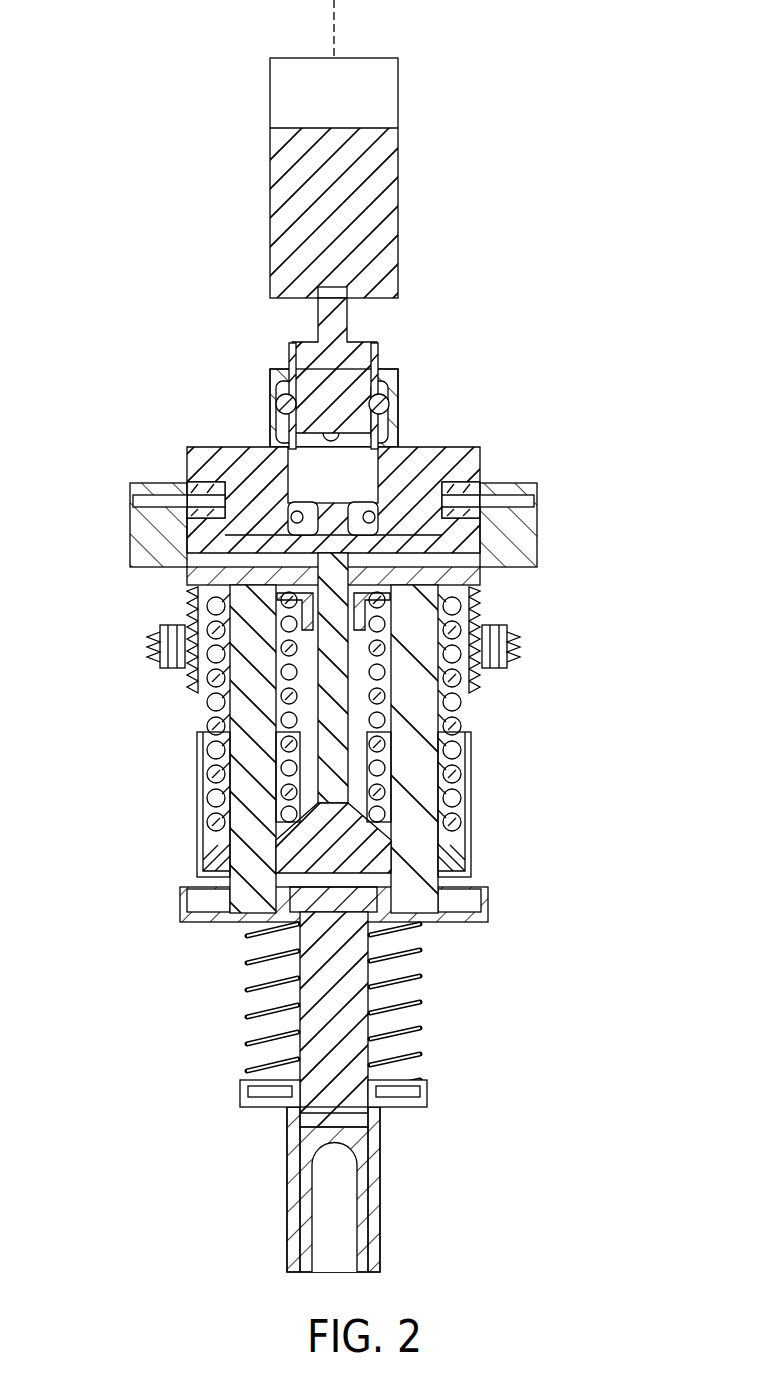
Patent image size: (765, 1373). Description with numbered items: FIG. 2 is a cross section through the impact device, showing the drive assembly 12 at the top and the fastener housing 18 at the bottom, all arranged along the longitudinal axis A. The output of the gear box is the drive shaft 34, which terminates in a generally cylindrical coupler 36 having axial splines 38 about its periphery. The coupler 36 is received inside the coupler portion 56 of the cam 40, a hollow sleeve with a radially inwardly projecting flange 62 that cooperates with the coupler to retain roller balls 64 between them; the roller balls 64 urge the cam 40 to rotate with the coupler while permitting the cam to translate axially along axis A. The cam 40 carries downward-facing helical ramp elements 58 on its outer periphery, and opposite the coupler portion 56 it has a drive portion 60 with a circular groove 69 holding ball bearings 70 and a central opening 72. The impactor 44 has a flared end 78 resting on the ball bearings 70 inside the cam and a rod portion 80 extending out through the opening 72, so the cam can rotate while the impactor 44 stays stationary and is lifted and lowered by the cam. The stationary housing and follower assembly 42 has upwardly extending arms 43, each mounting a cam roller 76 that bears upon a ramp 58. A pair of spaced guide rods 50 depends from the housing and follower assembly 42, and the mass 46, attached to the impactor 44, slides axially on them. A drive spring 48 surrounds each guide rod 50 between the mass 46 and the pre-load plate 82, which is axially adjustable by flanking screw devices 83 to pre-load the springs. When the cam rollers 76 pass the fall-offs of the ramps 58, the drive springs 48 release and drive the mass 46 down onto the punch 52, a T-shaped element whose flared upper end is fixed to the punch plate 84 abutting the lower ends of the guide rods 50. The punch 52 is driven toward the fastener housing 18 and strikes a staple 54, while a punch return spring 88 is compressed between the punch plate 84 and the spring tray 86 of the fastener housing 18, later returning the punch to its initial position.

The longitudinal axis A is at (337, 22).
The drive assembly 12 is at (404, 221).
The fastener housing 18 is at (380, 1176).
The drive shaft 34 is at (346, 306).
The coupler 36 is at (356, 376).
The axial splines 38 is at (290, 350).
The cam 40 is at (470, 446).
The housing and follower assembly 42 is at (555, 518).
The arms 43 is at (140, 525).
The impactor 44 is at (352, 663).
The mass 46 is at (440, 872).
The drive spring 48 is at (205, 775).
The guide rods 50 is at (258, 848).
The punch 52 is at (365, 1030).
The staple 54 is at (355, 1142).
The coupler portion 56 is at (393, 405).
The ramp elements 58 is at (494, 476).
The drive portion 60 is at (316, 510).
The flange 62 is at (271, 378).
The roller balls 64 is at (280, 404).
The circular groove 69 is at (412, 462).
The ball bearings 70 is at (262, 556).
The central opening 72 is at (237, 553).
The cam roller 76 is at (195, 492).
The flared end 78 is at (296, 510).
The rod portion 80 is at (300, 685).
The pre-load plate 82 is at (479, 600).
The screw devices 83 is at (156, 645).
The punch plate 84 is at (488, 916).
The spring tray 86 is at (428, 1100).
The punch return spring 88 is at (425, 1085).